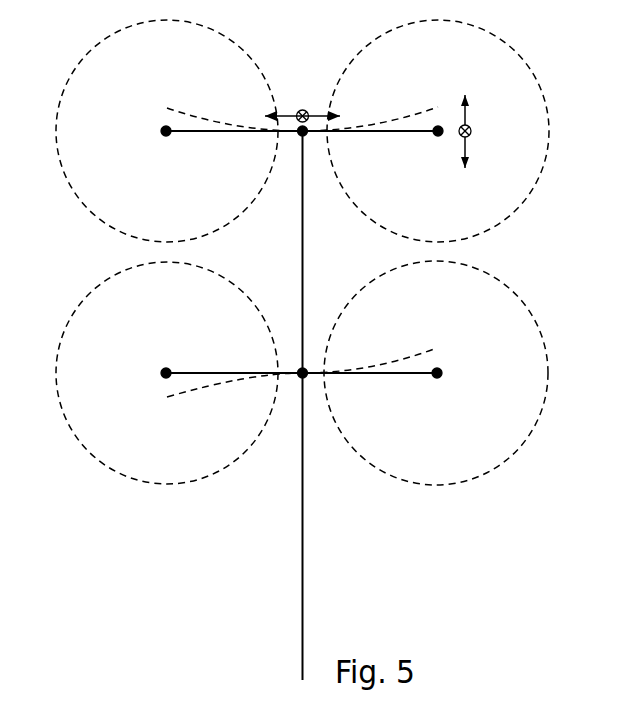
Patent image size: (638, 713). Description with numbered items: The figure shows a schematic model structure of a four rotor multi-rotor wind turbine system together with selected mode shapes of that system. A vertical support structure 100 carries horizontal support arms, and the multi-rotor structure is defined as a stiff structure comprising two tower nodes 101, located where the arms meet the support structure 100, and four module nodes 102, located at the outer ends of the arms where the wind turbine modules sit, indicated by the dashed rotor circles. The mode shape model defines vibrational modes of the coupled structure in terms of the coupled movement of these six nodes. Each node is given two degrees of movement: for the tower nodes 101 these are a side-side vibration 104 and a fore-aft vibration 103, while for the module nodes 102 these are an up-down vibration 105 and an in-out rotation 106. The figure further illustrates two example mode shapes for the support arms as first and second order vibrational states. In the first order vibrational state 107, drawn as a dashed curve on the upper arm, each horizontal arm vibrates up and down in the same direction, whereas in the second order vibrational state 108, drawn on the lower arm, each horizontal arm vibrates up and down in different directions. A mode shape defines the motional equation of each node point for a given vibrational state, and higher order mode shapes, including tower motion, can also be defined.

The mast 100 is at (303, 494).
The tower node 101 is at (302, 131).
The module node 102 is at (163, 133).
The fore-aft vibration 103 is at (307, 110).
The side-side vibration 104 is at (285, 112).
The up-down vibration 105 is at (468, 113).
The in-out rotation 106 is at (472, 135).
The first order vibrational state 107 is at (213, 87).
The second order vibrational state 108 is at (188, 390).